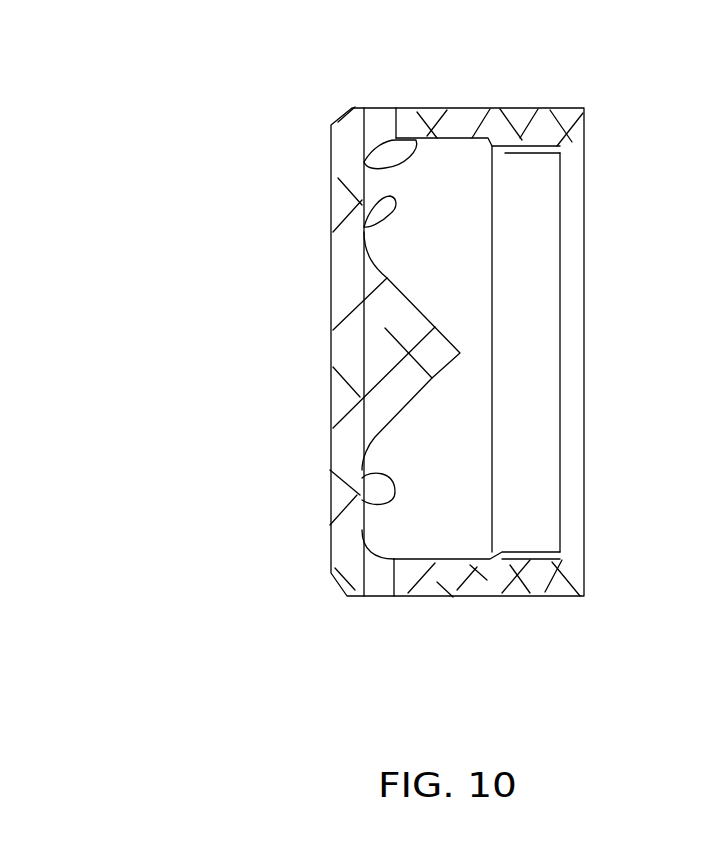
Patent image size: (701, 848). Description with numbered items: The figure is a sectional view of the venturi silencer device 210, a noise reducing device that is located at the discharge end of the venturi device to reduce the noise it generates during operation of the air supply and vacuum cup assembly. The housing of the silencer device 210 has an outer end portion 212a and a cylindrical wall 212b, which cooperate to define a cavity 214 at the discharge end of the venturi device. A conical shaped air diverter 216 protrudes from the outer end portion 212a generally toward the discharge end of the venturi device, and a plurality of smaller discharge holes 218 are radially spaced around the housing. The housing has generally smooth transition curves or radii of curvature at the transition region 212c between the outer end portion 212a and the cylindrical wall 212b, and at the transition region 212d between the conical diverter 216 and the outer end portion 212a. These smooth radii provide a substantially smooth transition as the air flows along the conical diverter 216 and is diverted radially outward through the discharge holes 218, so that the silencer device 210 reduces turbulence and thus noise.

The venturi silencer device 210 is at (292, 325).
The outer end portion 212a is at (333, 448).
The cylindrical wall 212b is at (477, 108).
The transition region 212c is at (415, 139).
The transition region 212d is at (372, 448).
The cavity 214 is at (533, 418).
The conical shaped air diverter 216 is at (447, 333).
The discharge holes 218 is at (377, 596).